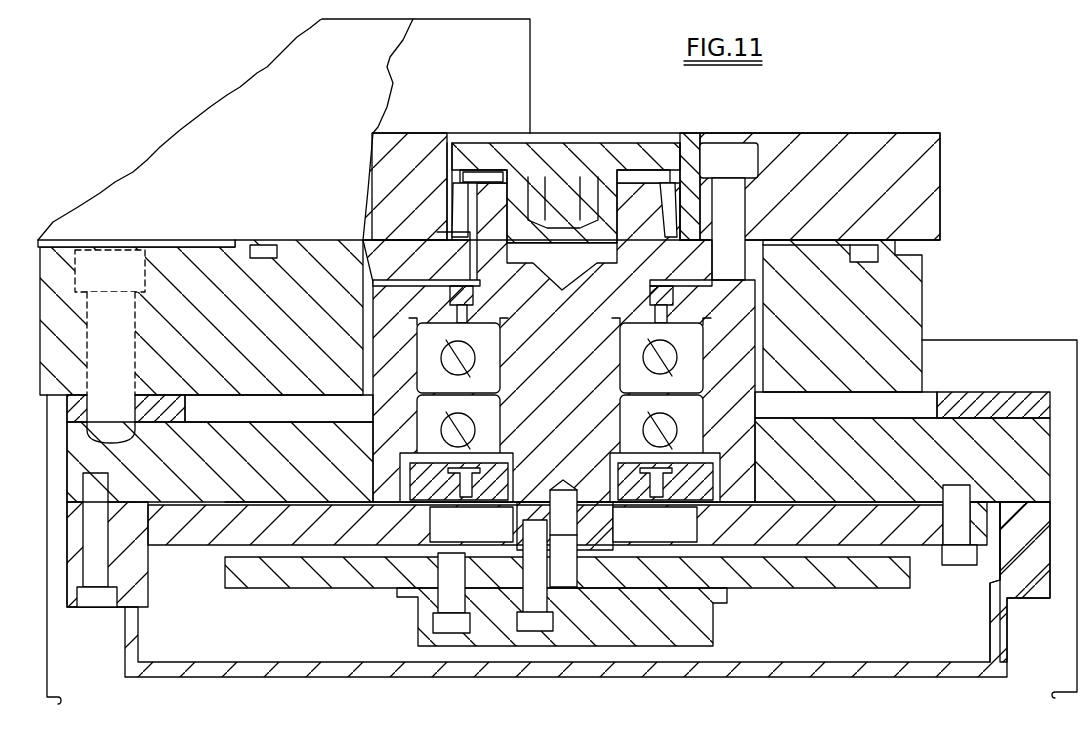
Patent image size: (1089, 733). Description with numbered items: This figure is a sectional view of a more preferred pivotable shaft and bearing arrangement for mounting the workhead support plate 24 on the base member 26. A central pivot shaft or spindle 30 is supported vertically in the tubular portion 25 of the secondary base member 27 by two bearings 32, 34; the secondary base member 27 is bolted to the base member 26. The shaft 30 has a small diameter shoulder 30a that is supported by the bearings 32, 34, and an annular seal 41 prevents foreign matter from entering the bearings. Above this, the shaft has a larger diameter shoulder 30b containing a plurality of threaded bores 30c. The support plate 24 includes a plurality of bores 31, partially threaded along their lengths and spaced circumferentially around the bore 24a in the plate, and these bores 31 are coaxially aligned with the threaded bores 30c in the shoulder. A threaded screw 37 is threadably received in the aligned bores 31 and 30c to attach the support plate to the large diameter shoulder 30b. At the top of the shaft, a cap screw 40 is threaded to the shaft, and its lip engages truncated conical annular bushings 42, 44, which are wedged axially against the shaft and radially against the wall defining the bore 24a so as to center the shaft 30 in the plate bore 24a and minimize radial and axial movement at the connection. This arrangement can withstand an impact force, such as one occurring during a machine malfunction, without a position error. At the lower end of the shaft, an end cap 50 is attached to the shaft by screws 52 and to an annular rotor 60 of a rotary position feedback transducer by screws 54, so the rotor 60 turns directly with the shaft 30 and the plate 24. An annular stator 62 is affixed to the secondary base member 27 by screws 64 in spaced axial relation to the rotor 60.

The workhead support plate 24 is at (928, 172).
The bore in the plate 24a is at (450, 187).
The cap screw 40 is at (607, 150).
The pivot shaft or spindle 30 is at (648, 190).
The threaded screw 37 is at (722, 158).
The bores 31 is at (745, 197).
The annular seal 41 is at (662, 298).
The base member 26 is at (895, 280).
The threaded bores 30c is at (757, 230).
The truncated conical annular bushing 42 is at (455, 190).
The truncated conical annular bushing 44 is at (462, 210).
The larger diameter shoulder 30b is at (445, 240).
The small diameter shoulder 30a is at (465, 290).
The bearing 34 is at (396, 348).
The bearing 32 is at (396, 431).
The tubular portion 25 is at (744, 369).
The secondary base member 27 is at (840, 468).
The screws 64 is at (970, 497).
The annular stator 62 is at (828, 534).
The annular rotor 60 is at (774, 582).
The end cap 50 is at (659, 619).
The screws 52 is at (550, 621).
The screws 54 is at (443, 623).